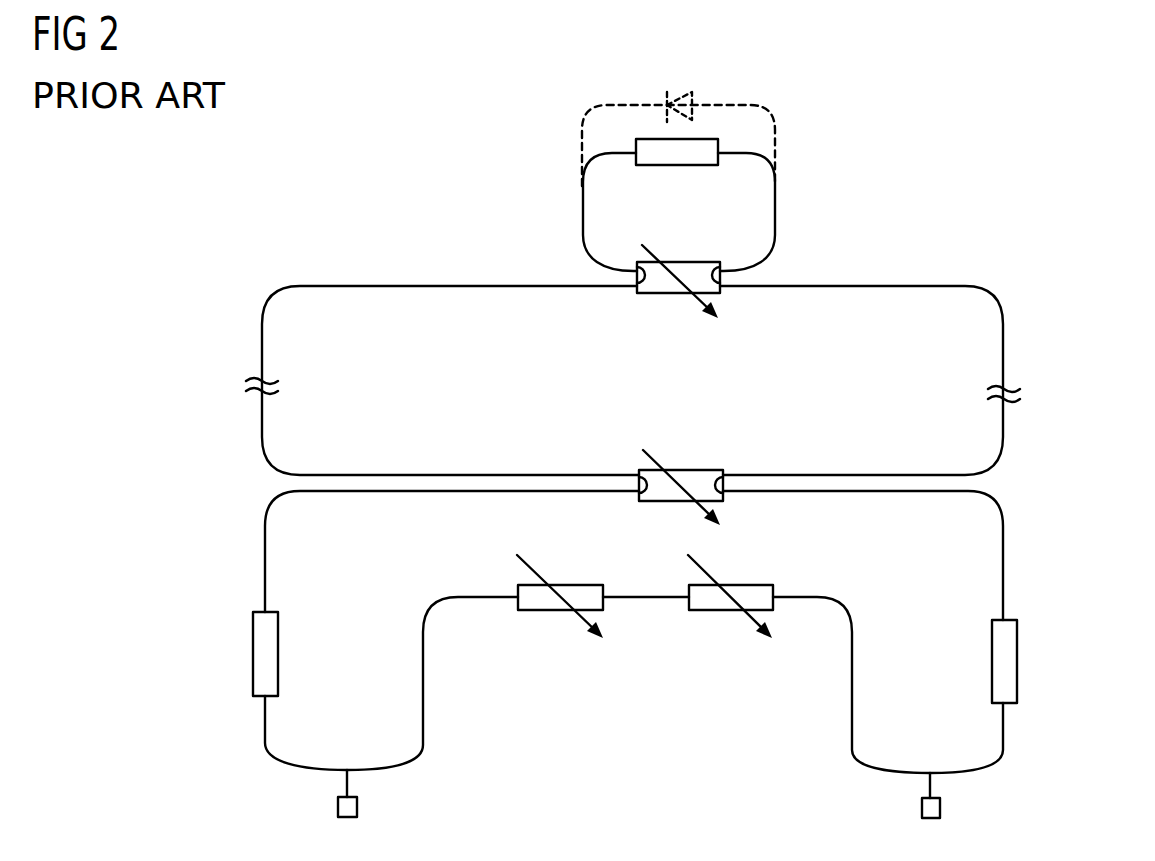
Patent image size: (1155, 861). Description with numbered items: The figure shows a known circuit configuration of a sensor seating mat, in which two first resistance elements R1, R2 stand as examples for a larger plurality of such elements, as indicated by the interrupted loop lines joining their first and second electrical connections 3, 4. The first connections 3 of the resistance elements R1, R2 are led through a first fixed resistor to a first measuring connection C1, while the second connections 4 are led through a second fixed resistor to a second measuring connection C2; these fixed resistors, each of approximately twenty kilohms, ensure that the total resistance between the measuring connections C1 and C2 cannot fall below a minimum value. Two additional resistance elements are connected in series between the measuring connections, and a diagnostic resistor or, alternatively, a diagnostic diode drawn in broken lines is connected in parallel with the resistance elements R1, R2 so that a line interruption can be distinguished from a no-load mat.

The first resistance element R1 is at (668, 294).
The first resistance element R2 is at (680, 470).
The second electrical connection 4 is at (637, 278).
The first electrical connection 3 is at (720, 278).
The second measuring connection C2 is at (357, 804).
The first measuring connection C1 is at (940, 808).